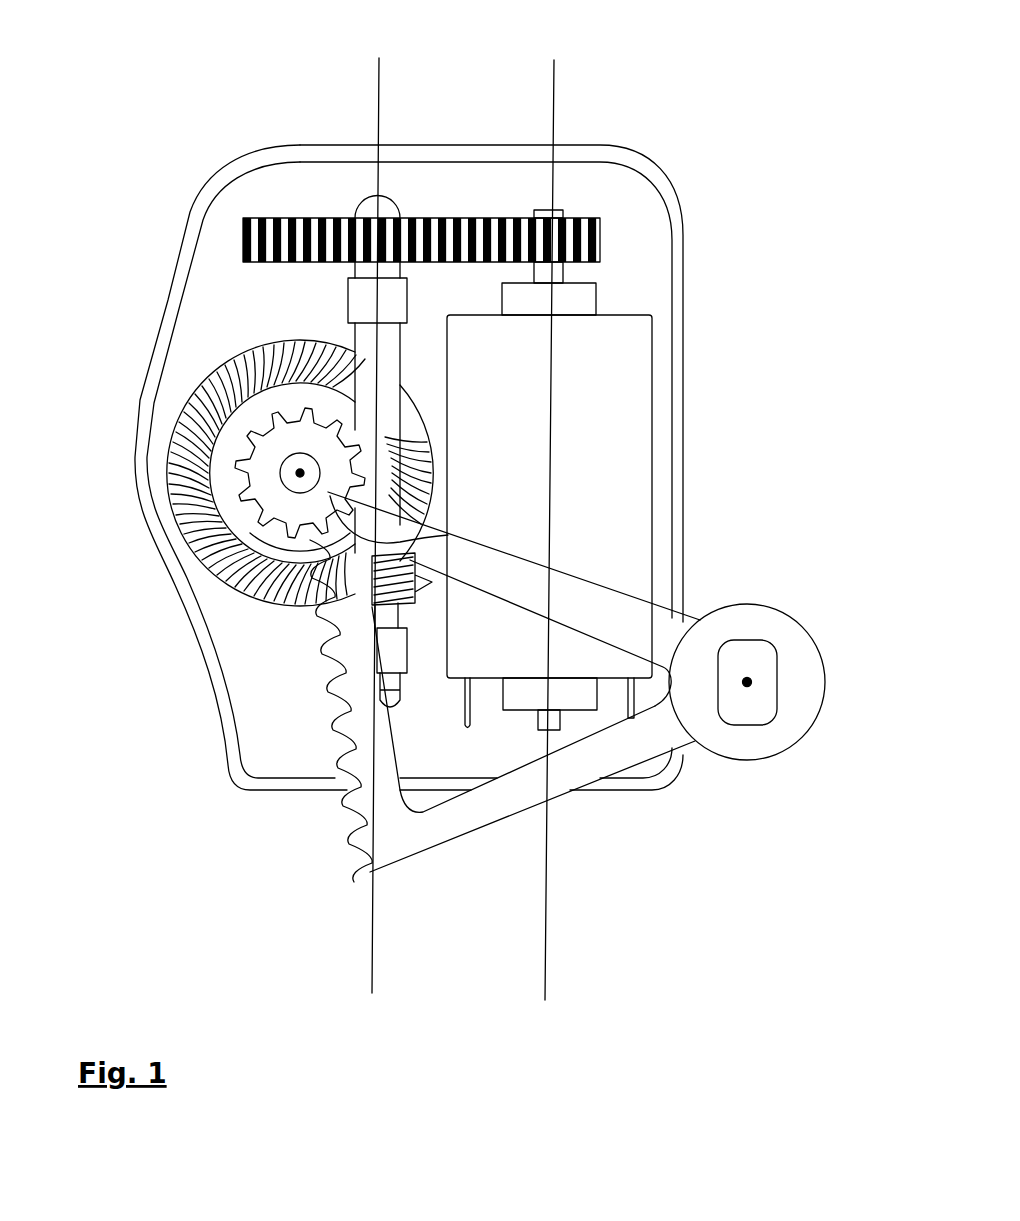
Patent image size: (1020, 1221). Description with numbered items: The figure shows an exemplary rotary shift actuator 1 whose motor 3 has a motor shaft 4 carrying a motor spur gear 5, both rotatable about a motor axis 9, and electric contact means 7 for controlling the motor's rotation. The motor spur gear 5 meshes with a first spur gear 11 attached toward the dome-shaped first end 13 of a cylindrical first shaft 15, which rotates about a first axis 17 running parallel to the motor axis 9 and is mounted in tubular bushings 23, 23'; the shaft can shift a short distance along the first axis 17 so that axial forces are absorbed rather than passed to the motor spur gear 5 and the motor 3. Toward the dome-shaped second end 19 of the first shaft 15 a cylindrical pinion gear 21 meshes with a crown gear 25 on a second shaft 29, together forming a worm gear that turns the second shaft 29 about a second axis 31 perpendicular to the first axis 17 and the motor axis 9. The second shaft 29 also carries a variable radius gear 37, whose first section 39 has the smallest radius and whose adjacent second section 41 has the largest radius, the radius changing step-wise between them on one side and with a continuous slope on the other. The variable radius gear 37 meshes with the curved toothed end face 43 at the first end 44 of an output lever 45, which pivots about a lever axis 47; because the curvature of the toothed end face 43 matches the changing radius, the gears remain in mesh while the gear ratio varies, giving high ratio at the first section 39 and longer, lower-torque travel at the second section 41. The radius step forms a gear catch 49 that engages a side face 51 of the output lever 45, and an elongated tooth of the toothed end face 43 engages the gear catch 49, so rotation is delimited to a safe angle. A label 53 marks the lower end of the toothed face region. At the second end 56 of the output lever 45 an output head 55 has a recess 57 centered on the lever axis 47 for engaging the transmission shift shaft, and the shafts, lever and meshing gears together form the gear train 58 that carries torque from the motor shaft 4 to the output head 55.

The rotary shift actuator 1 is at (688, 180).
The motor 3 is at (603, 392).
The motor shaft 4 is at (552, 273).
The motor spur gear 5 is at (573, 230).
The electric contact means 7 is at (630, 707).
The motor axis 9 is at (548, 962).
The first spur gear 11 is at (268, 213).
The first end 13 is at (378, 197).
The first shaft 15 is at (367, 342).
The first axis 17 is at (380, 78).
The second end 19 is at (387, 700).
The cylindrical pinion gear 21 is at (410, 585).
The tubular bushing 23 is at (408, 292).
The tubular bushing 23' is at (418, 680).
The crown gear 25 is at (188, 600).
The second shaft 29 is at (287, 476).
The second axis 31 is at (295, 472).
The variable radius gear 37 is at (277, 428).
The first section 39 is at (323, 497).
The second section 41 is at (343, 493).
The toothed end face 43 is at (345, 805).
The first end 44 is at (397, 810).
The output lever 45 is at (573, 600).
The lever axis 47 is at (748, 687).
The gear catch 49 is at (336, 487).
The side face 51 is at (397, 537).
The rack end 53 is at (350, 877).
The output head 55 is at (735, 617).
The second end 56 is at (719, 737).
The recess 57 is at (792, 653).
The gear train 58 is at (230, 657).